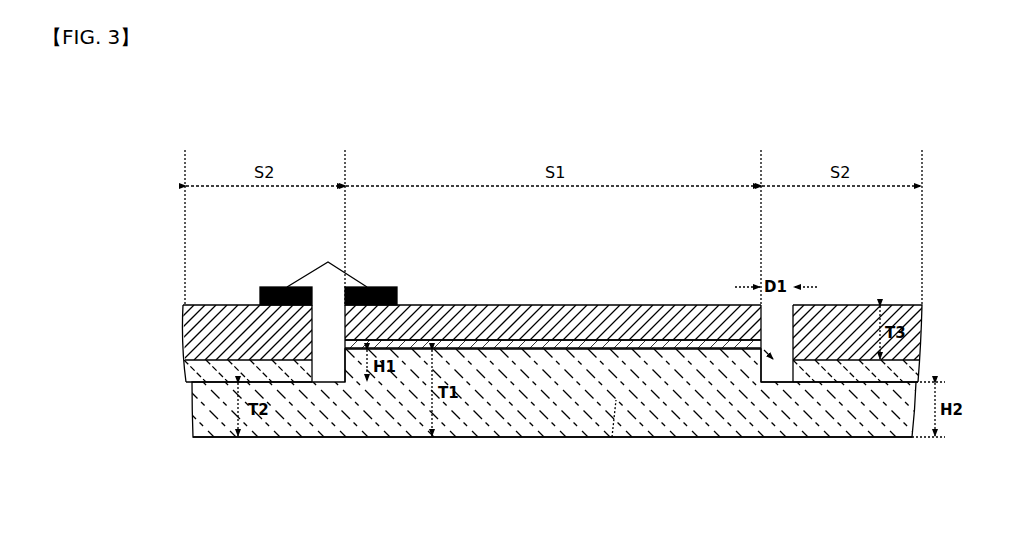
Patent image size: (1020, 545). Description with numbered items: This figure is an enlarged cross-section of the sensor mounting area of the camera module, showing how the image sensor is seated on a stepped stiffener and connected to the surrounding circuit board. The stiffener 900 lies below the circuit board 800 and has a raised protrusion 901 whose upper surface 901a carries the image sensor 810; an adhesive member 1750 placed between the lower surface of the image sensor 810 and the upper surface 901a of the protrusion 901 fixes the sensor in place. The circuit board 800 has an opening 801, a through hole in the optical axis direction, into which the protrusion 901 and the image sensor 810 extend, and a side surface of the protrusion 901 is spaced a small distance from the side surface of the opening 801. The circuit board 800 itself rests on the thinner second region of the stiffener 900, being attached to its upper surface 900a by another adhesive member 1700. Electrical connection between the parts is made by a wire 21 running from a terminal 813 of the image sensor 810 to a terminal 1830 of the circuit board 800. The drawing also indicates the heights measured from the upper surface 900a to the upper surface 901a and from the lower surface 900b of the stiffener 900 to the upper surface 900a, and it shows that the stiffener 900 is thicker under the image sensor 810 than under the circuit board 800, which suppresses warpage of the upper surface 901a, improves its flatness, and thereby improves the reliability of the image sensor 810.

The wire 21 is at (328, 262).
The terminal of the circuit board 1830 is at (282, 287).
The terminal of the image sensor 813 is at (383, 287).
The image sensor 810 is at (455, 318).
The adhesive member 1750 is at (548, 345).
The opening of the circuit board 801 is at (747, 313).
The circuit board 800 is at (850, 320).
The adhesive member 1700 is at (190, 371).
The stiffener 900 is at (200, 410).
The protrusion 901 is at (338, 372).
The upper surface of the protrusion 901a is at (612, 437).
The lower surface of the stiffener 900b is at (690, 437).
The upper surface of the second region of the stiffener 900a is at (786, 383).